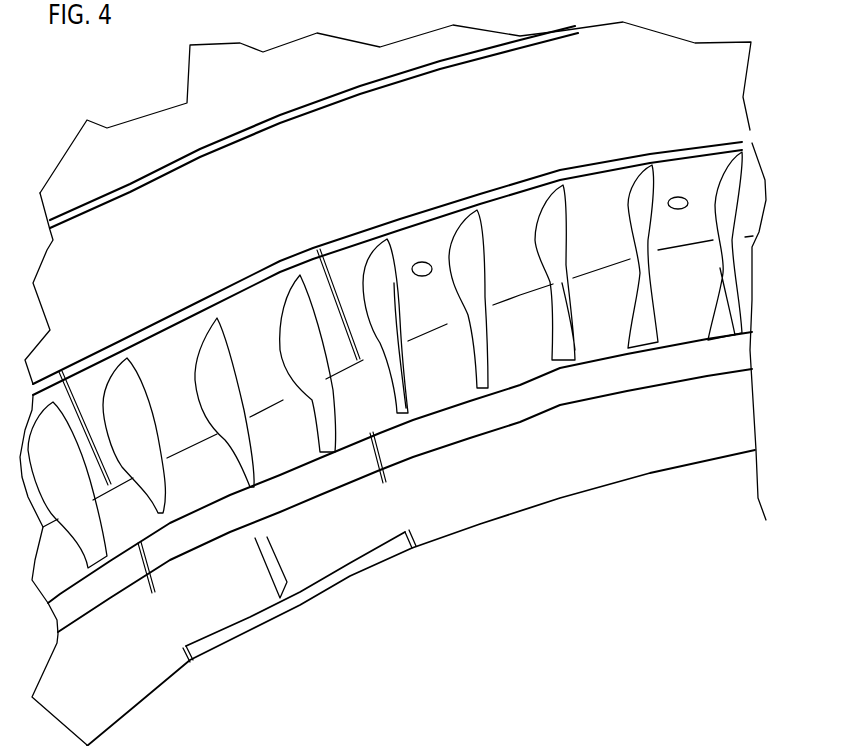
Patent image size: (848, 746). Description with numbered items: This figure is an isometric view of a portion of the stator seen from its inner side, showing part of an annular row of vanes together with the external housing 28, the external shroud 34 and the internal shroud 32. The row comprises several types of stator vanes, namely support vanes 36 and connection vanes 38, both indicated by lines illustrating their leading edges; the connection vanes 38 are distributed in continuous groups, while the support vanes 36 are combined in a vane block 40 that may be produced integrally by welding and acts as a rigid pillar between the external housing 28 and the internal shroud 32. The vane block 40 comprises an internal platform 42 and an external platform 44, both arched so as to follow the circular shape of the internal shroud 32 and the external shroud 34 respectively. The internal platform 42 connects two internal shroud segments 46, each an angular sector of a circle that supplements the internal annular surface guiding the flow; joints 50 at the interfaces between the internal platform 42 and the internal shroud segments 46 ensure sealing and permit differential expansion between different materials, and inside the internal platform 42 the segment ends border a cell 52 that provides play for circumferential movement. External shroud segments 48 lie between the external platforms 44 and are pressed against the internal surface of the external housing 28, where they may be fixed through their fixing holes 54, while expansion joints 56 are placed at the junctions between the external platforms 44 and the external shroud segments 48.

The external housing 28 is at (274, 168).
The internal shroud 32 is at (544, 624).
The external shroud 34 is at (567, 137).
The support vanes 36 is at (138, 431).
The connection vanes 38 is at (63, 469).
The vane block 40 is at (322, 620).
The internal platform 42 is at (368, 560).
The external platform 44 is at (172, 340).
The internal shroud segment 46 is at (663, 440).
The external shroud segment 48 is at (423, 241).
The joint 50 is at (194, 667).
The cell 52 is at (272, 595).
The fixing hole 54 is at (420, 274).
The expansion joint 56 is at (320, 252).